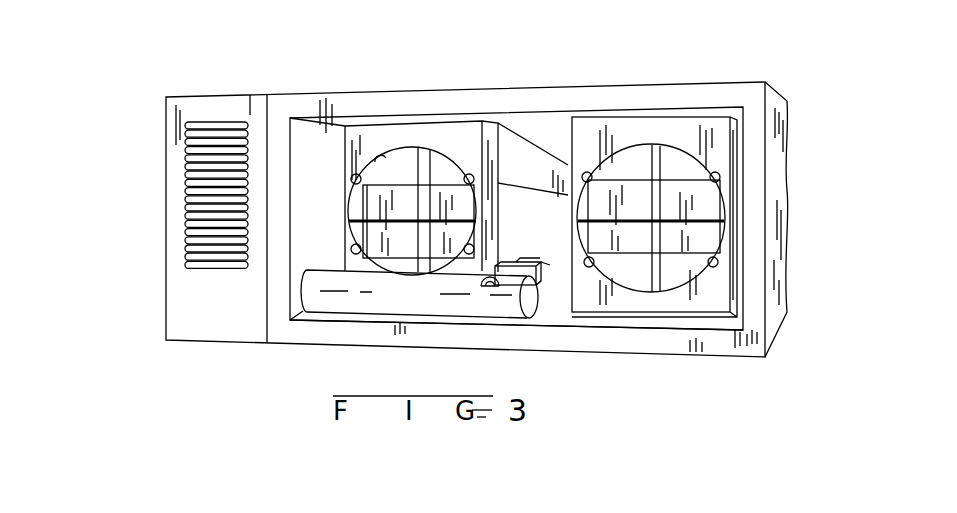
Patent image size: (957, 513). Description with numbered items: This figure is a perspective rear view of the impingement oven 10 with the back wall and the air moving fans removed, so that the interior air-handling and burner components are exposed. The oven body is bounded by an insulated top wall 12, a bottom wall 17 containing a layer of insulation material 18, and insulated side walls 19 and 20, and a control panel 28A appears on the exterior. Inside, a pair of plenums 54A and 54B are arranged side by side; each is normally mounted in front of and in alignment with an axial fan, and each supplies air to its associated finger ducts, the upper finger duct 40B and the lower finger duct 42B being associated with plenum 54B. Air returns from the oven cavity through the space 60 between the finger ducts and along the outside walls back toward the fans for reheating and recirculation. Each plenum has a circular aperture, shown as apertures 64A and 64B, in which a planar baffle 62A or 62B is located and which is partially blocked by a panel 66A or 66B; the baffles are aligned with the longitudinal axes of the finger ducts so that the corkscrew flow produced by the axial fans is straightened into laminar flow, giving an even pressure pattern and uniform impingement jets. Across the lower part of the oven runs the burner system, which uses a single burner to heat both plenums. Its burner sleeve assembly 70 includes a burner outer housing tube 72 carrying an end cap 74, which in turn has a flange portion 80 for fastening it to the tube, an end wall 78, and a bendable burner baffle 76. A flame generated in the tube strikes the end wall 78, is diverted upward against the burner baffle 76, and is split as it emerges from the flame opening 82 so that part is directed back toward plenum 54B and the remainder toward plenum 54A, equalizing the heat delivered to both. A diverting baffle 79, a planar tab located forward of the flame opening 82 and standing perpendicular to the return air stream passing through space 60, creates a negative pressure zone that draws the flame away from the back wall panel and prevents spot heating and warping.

The impingement oven 10 is at (764, 50).
The top wall 12 is at (536, 88).
The bottom wall 17 is at (666, 354).
The insulation material 18 is at (710, 346).
The side wall 19 is at (785, 227).
The side wall 20 is at (165, 188).
The front panel 28A is at (317, 4).
The finger duct 40B is at (543, 173).
The finger duct 42B is at (550, 267).
The plenum 54A is at (632, 122).
The plenum 54B is at (455, 133).
The space 60 is at (553, 138).
The baffle 62A is at (658, 160).
The baffle 62B is at (420, 148).
The circular aperture 64A is at (716, 170).
The circular aperture 64B is at (381, 157).
The panel 66A is at (702, 240).
The panel 66B is at (378, 238).
The burner sleeve assembly 70 is at (355, 315).
The burner outer housing tube 72 is at (410, 303).
The end cap 74 is at (515, 248).
The burner baffle 76 is at (537, 290).
The end wall 78 is at (535, 313).
The diverting baffle 79 is at (520, 268).
The flange portion 80 is at (521, 302).
The flame opening 82 is at (488, 282).